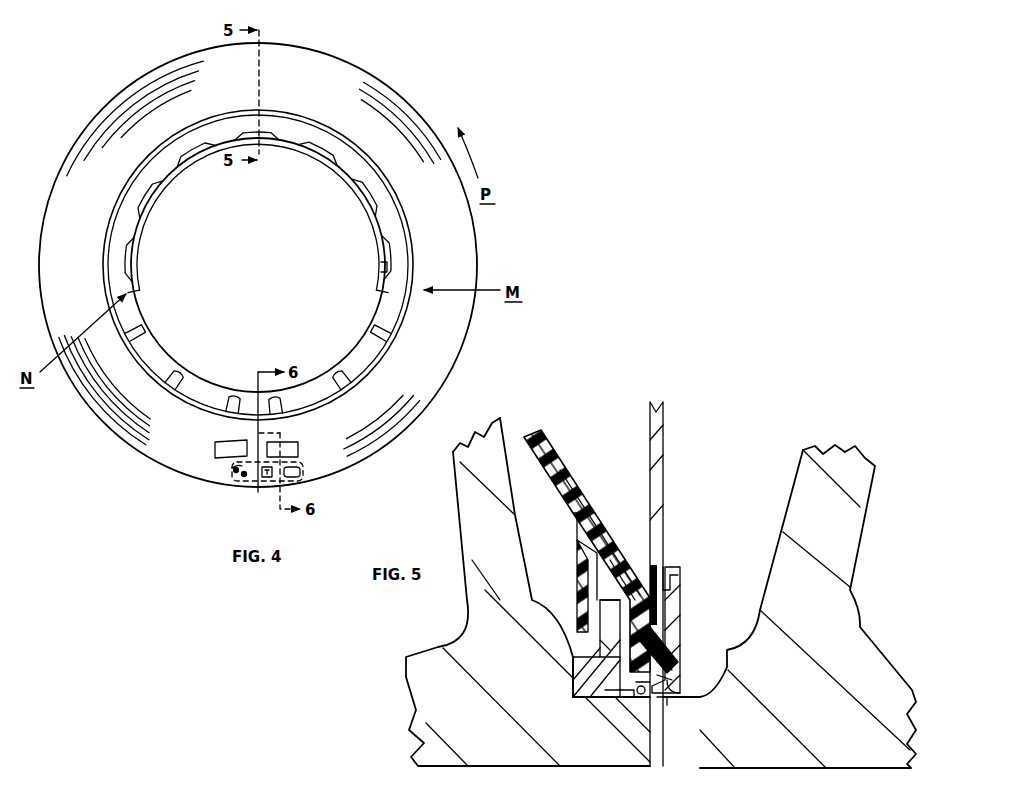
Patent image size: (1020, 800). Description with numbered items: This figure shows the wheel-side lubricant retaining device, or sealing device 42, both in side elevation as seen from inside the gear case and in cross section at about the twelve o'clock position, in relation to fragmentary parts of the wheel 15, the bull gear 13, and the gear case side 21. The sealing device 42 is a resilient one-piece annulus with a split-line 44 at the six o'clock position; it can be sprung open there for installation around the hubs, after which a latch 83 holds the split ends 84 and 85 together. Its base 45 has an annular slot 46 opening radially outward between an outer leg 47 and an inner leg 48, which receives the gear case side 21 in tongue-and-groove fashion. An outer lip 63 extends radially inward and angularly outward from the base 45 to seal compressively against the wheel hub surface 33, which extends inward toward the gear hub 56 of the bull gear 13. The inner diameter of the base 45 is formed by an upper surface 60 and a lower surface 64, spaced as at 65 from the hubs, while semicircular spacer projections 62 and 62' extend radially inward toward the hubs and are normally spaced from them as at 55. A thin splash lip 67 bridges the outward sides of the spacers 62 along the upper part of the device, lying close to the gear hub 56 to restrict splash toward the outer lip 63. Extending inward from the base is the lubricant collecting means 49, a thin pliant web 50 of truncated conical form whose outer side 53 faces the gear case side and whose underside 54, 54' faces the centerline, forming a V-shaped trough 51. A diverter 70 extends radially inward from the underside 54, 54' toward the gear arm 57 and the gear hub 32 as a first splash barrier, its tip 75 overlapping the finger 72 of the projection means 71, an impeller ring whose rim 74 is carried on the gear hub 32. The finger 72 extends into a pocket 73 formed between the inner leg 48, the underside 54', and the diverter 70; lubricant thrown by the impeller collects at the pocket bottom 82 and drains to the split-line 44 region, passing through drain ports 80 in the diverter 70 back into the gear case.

In FIG. 4, the wheel-side sealing device 42 is at (406, 90).
In FIG. 5, the wheel-side sealing device 42 is at (684, 589).
In FIG. 4, the diverter tip 75 is at (241, 107).
In FIG. 4, the upper inner diameter surface 60 is at (306, 131).
In FIG. 5, the upper inner diameter surface 60 is at (674, 665).
In FIG. 4, the spacer projection 62 is at (279, 271).
In FIG. 4, the splash lip 67 is at (377, 267).
In FIG. 5, the splash lip 67 is at (645, 700).
In FIG. 4, the diverter 70 is at (94, 251).
In FIG. 4, the outer lip 63 is at (166, 336).
In FIG. 5, the outer lip 63 is at (683, 684).
In FIG. 4, the lower inner diameter surface 64 is at (199, 388).
In FIG. 4, the split-line 44 is at (250, 429).
In FIG. 4, the drain port 80 is at (215, 447).
In FIG. 4, the latch 83 is at (233, 473).
In FIG. 4, the split end 84 is at (229, 486).
In FIG. 4, the split end 85 is at (263, 489).
In FIG. 5, the bull gear 13 is at (462, 518).
In FIG. 5, the gear arm 57 is at (510, 526).
In FIG. 5, the lubricant collecting means 49 is at (564, 447).
In FIG. 5, the web 50 is at (576, 492).
In FIG. 5, the gear case side 21 is at (662, 425).
In FIG. 5, the V-shaped trough 51 is at (614, 496).
In FIG. 5, the outer side of web 53 is at (606, 536).
In FIG. 5, the underside of web 54 is at (555, 524).
In FIG. 5, the pocket bottom 82 is at (578, 548).
In FIG. 5, the underside of web 54' is at (564, 586).
In FIG. 5, the pocket 73 is at (602, 590).
In FIG. 5, the inner leg 48 is at (596, 650).
In FIG. 5, the finger 72 is at (607, 611).
In FIG. 5, the projection means 71 is at (601, 627).
In FIG. 5, the rim 74 is at (578, 694).
In FIG. 5, the spacer projection 62' is at (594, 710).
In FIG. 5, the spacing from hub 55 is at (630, 698).
In FIG. 5, the gear hub 56 is at (638, 700).
In FIG. 5, the spacing 65 is at (662, 700).
In FIG. 5, the outer leg 47 is at (675, 624).
In FIG. 5, the base 45 is at (673, 650).
In FIG. 5, the annular slot 46 is at (671, 563).
In FIG. 5, the wheel hub surface 33 is at (705, 698).
In FIG. 5, the wheel 15 is at (832, 655).
In FIG. 5, the gear hub 32 is at (452, 716).